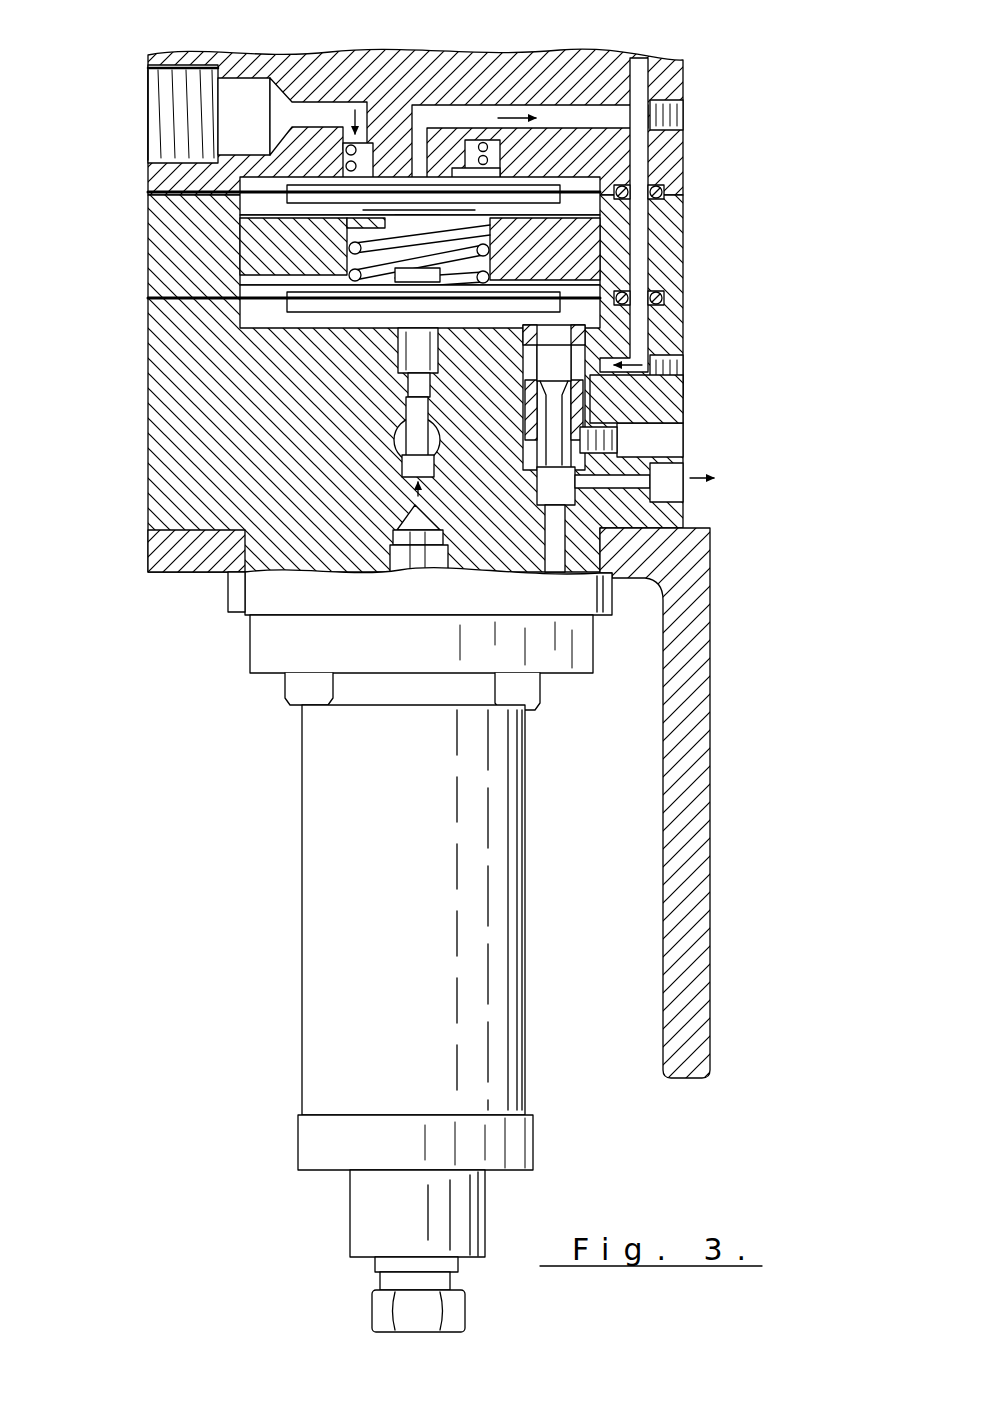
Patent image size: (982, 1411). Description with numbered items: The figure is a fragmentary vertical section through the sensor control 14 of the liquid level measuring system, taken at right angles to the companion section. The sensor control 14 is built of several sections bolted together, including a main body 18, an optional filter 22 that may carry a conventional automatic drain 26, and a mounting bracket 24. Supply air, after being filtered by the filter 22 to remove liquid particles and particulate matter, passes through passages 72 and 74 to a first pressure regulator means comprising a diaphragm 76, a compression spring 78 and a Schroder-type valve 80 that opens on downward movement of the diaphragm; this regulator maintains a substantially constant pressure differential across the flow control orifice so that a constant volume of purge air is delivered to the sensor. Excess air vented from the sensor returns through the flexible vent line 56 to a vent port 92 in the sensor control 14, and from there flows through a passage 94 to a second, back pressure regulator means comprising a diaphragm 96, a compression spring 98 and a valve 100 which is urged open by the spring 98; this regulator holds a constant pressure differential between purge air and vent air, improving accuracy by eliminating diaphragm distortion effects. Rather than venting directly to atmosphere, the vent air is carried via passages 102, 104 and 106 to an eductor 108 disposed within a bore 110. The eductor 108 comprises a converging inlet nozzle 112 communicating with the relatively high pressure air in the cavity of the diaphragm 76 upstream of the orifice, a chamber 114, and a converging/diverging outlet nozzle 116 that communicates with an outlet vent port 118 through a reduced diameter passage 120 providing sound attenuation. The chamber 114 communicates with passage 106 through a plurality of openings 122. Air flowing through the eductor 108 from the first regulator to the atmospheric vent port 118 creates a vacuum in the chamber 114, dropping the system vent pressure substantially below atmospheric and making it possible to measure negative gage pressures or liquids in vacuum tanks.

The sensor control 14 is at (112, 437).
The main body 18 is at (152, 230).
The filter 22 is at (434, 834).
The mounting bracket 24 is at (700, 870).
The automatic drain 26 is at (385, 1278).
The vent line 56 is at (142, 112).
The passage 72 is at (430, 502).
The passage 74 is at (394, 438).
The diaphragm 76 is at (273, 302).
The compression spring 78 is at (495, 265).
The Schroder-type valve 80 is at (398, 366).
The vent port 92 is at (148, 148).
The passage 94 is at (305, 103).
The diaphragm 96 is at (273, 198).
The compression spring 98 is at (497, 175).
The valve 100 is at (425, 178).
The passage 102 is at (512, 105).
The passage 104 is at (648, 224).
The passage 106 is at (655, 362).
The eductor 108 is at (540, 406).
The bore 110 is at (524, 362).
The converging inlet nozzle 112 is at (550, 350).
The chamber 114 is at (535, 386).
The converging/diverging outlet nozzle 116 is at (538, 458).
The outlet vent port 118 is at (672, 498).
The reduced diameter passage 120 is at (622, 478).
The openings 122 is at (604, 376).